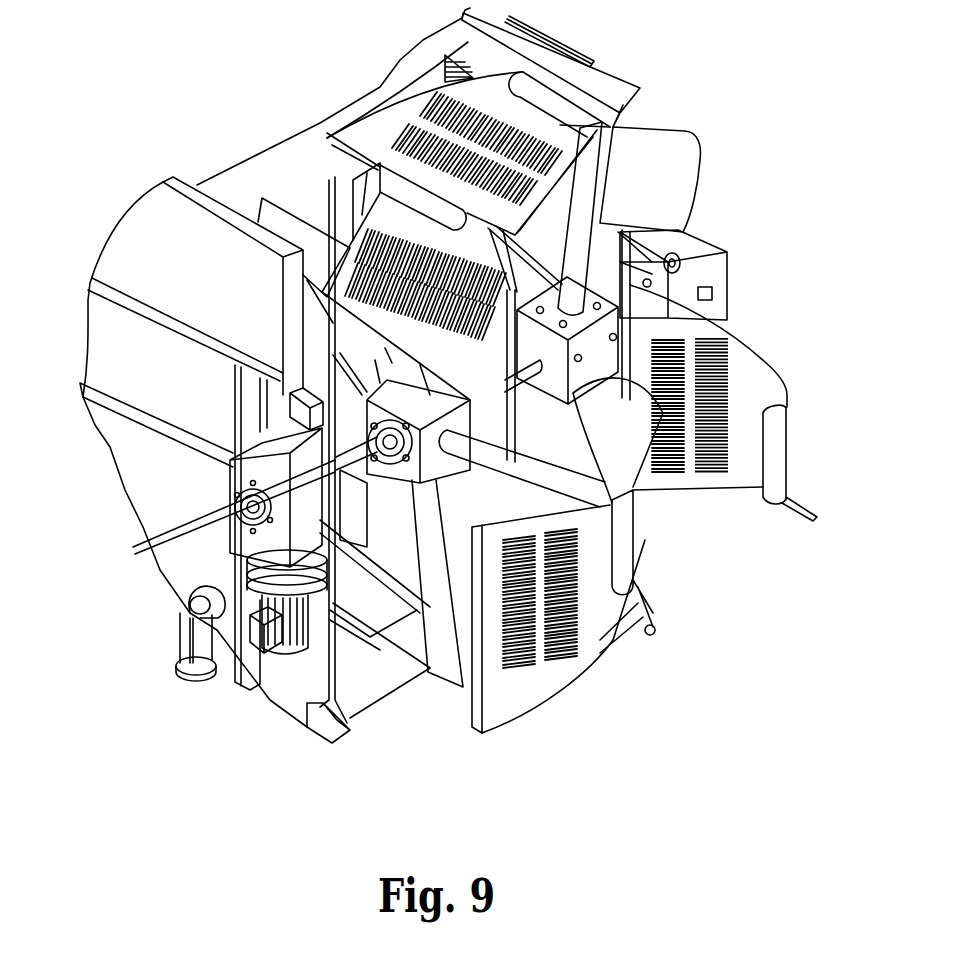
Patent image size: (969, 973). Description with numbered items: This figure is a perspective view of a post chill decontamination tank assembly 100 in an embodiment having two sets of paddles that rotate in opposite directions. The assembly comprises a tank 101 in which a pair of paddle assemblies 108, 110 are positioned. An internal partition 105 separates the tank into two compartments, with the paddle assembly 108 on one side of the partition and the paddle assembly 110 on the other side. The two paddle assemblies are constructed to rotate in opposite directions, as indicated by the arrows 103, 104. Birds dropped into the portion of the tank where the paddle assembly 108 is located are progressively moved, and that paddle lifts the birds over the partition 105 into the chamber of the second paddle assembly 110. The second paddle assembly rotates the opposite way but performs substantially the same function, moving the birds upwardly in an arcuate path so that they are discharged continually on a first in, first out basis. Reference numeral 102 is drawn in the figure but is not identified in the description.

The post chill decontamination tank assembly 100 is at (203, 137).
The tank 101 is at (118, 211).
The hinge 102 is at (655, 632).
The arrow 103 is at (806, 406).
The arrow 104 is at (666, 565).
The internal partition 105 is at (286, 218).
The paddle assembly 108 is at (742, 512).
The paddle assembly 110 is at (570, 693).